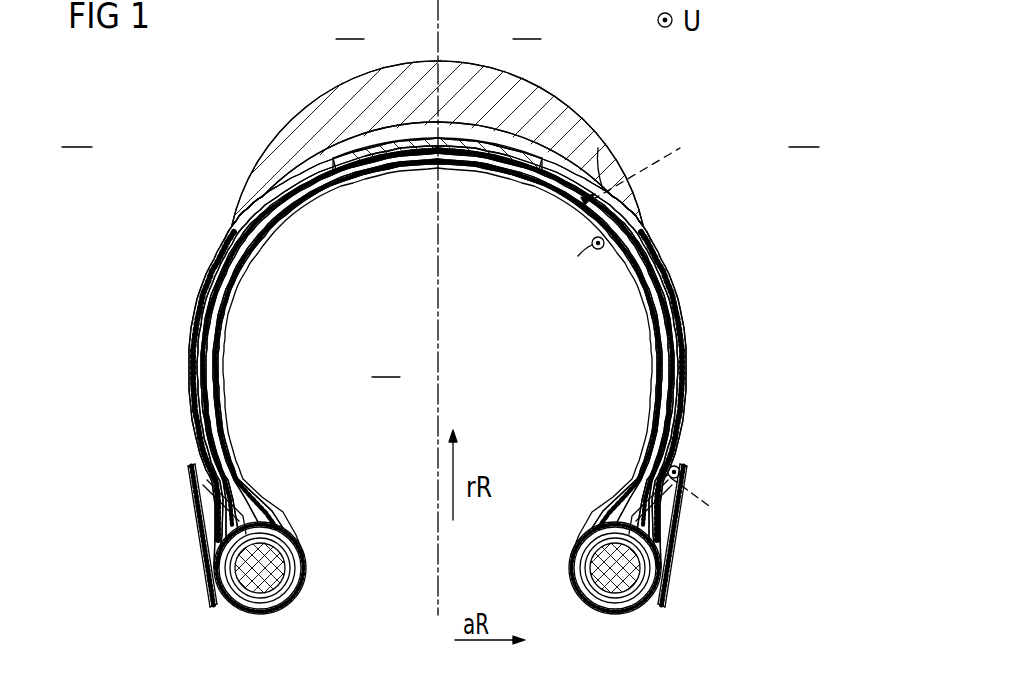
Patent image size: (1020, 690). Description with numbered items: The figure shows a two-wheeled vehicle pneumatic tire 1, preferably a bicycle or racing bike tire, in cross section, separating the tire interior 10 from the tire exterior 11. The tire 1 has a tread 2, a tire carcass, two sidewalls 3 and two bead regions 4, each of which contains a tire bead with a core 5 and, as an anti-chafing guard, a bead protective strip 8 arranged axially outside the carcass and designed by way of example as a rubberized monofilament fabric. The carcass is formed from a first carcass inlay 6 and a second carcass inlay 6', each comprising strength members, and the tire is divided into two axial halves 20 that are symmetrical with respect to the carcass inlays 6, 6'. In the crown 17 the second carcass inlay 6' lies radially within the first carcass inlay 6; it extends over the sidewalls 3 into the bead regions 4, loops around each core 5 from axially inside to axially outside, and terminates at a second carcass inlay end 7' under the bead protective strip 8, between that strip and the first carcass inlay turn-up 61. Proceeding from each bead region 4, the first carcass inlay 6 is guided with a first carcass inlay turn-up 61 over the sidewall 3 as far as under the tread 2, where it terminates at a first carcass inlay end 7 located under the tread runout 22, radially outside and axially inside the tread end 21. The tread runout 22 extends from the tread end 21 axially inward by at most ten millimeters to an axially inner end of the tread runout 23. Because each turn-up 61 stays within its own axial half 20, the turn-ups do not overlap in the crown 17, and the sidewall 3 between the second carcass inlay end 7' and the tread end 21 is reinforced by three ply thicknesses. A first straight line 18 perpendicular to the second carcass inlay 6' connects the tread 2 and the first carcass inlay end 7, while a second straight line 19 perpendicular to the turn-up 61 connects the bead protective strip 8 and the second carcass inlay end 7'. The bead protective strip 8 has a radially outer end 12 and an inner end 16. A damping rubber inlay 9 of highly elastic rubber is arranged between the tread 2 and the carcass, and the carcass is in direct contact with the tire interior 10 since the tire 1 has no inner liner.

The two-wheeled vehicle pneumatic tire 1 is at (217, 90).
The tread 2 is at (540, 92).
The sidewall 3 is at (165, 297).
The bead region 4 is at (320, 530).
The core 5 is at (270, 573).
The first carcass inlay 6 is at (437, 345).
The second carcass inlay 6' is at (437, 361).
The first carcass inlay end 7 is at (437, 170).
The second carcass inlay end 7' is at (437, 465).
The bead protective strip 8 is at (204, 543).
The rubber inlay 9 is at (358, 157).
The tire interior 10 is at (386, 360).
The tire exterior 11 is at (440, 130).
The radially outer end of the bead protective strip 12 is at (189, 466).
The inner end 16 is at (210, 608).
The crown 17 is at (430, 55).
The first straight line 18 is at (663, 168).
The second straight line 19 is at (710, 490).
The axial half 20 is at (438, 23).
The tread end 21 is at (228, 231).
The tread runout 22 is at (585, 200).
The end of the tread runout 23 is at (600, 183).
The first carcass inlay turn-up 61 is at (190, 352).